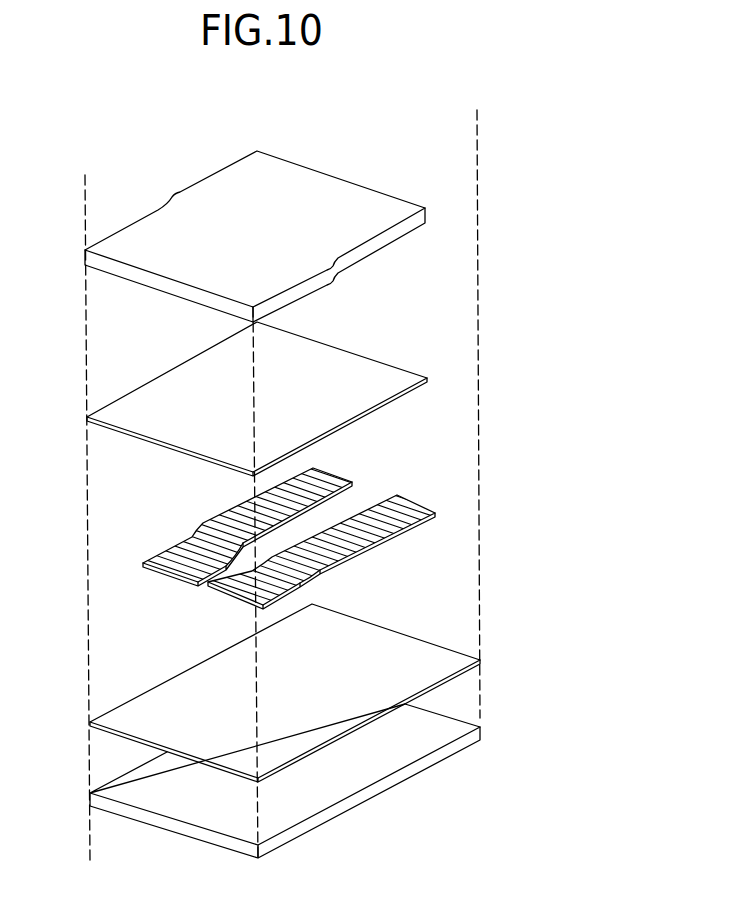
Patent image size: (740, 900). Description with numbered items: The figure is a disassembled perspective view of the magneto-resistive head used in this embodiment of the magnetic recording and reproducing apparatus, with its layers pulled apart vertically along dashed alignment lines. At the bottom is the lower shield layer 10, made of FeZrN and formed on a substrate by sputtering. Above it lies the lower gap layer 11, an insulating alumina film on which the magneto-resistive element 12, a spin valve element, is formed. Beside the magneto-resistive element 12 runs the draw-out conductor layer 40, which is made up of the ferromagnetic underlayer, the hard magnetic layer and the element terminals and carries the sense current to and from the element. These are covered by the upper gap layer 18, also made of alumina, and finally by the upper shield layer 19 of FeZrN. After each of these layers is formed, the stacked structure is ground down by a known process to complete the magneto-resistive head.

The upper shield layer 19 is at (397, 210).
The upper gap layer 18 is at (387, 377).
The draw-out conductor layer 40 is at (425, 523).
The magneto-resistive element 12 is at (205, 583).
The lower gap layer 11 is at (432, 667).
The lower shield layer 10 is at (435, 742).